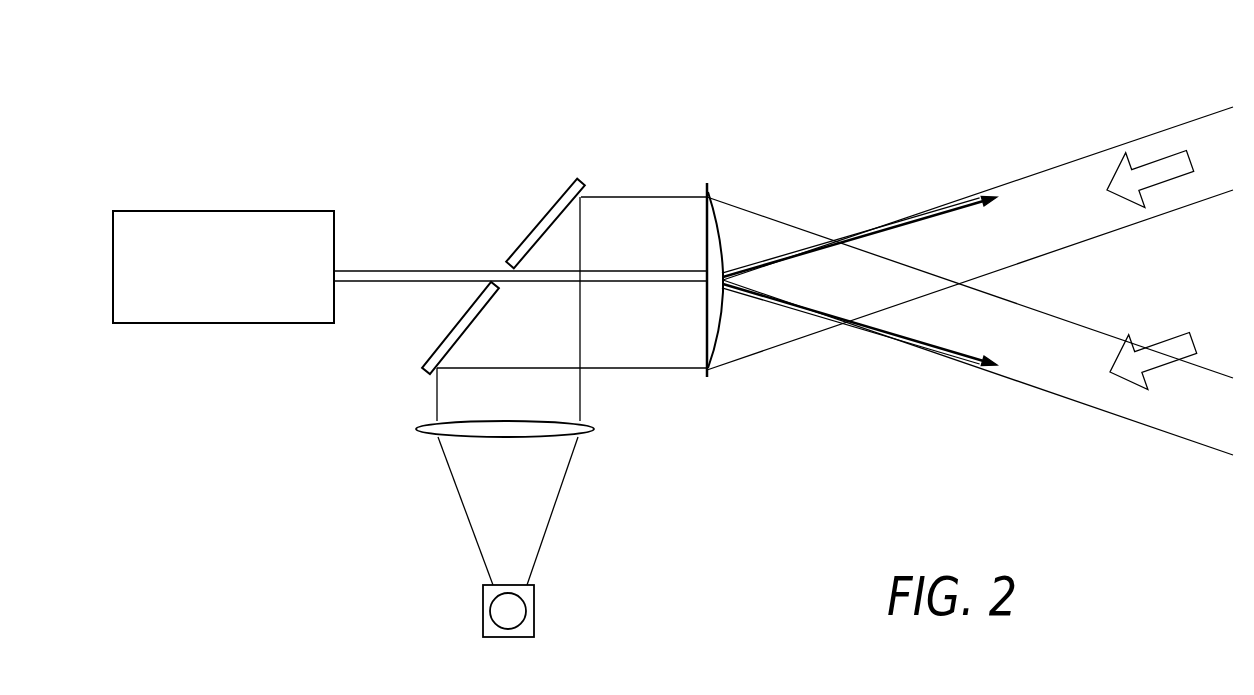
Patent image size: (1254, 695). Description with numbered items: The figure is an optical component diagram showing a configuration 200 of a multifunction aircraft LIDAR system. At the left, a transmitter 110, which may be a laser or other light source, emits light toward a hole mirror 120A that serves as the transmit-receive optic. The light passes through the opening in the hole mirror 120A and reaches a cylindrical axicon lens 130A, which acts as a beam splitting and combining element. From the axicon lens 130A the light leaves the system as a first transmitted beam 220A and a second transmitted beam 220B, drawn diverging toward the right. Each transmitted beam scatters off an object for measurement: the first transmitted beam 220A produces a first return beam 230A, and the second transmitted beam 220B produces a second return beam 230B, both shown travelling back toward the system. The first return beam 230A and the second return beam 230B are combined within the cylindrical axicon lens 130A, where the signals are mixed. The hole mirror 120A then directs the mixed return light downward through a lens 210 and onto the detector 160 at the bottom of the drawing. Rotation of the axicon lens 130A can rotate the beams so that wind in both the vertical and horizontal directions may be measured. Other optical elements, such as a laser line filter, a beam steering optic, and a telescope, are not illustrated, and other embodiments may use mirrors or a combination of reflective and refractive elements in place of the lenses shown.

The configuration 200 is at (307, 81).
The transmitter 110 is at (240, 291).
The hole mirror 120A is at (556, 198).
The cylindrical axicon lens 130A is at (707, 192).
The lens 210 is at (415, 427).
The detector 160 is at (483, 607).
The first transmitted beam 220A is at (935, 215).
The second transmitted beam 220B is at (920, 345).
The first return beam 230A is at (1157, 132).
The second return beam 230B is at (1177, 437).